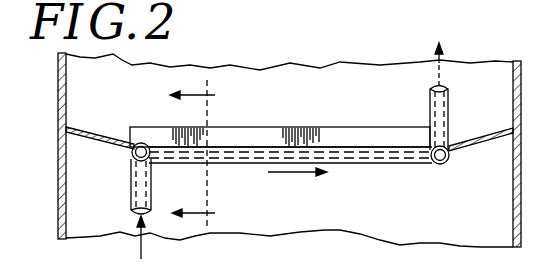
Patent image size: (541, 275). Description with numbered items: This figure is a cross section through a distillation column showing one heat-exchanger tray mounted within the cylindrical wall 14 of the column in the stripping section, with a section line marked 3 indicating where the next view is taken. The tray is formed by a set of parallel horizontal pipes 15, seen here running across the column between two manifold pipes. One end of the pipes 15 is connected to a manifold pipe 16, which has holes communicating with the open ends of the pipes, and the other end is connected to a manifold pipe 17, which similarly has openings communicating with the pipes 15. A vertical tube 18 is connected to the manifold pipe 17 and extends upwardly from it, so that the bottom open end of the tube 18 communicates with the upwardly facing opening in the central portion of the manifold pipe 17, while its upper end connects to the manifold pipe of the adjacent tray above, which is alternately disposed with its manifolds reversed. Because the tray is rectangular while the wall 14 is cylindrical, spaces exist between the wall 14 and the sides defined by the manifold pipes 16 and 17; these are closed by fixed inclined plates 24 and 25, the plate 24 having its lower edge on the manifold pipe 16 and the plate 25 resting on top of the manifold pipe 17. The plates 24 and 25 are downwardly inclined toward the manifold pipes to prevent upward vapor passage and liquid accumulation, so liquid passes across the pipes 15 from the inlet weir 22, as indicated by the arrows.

The wall 14 is at (58, 158).
The parallel horizontal pipes 15 is at (379, 164).
The manifold pipe 16 is at (143, 145).
The manifold pipe 17 is at (449, 161).
The vertical tube 18 is at (152, 197).
The inlet weir 22 is at (332, 128).
The fixed inclined plate 24 is at (83, 126).
The fixed inclined plate 25 is at (499, 130).
The section line 3- 3 is at (203, 159).